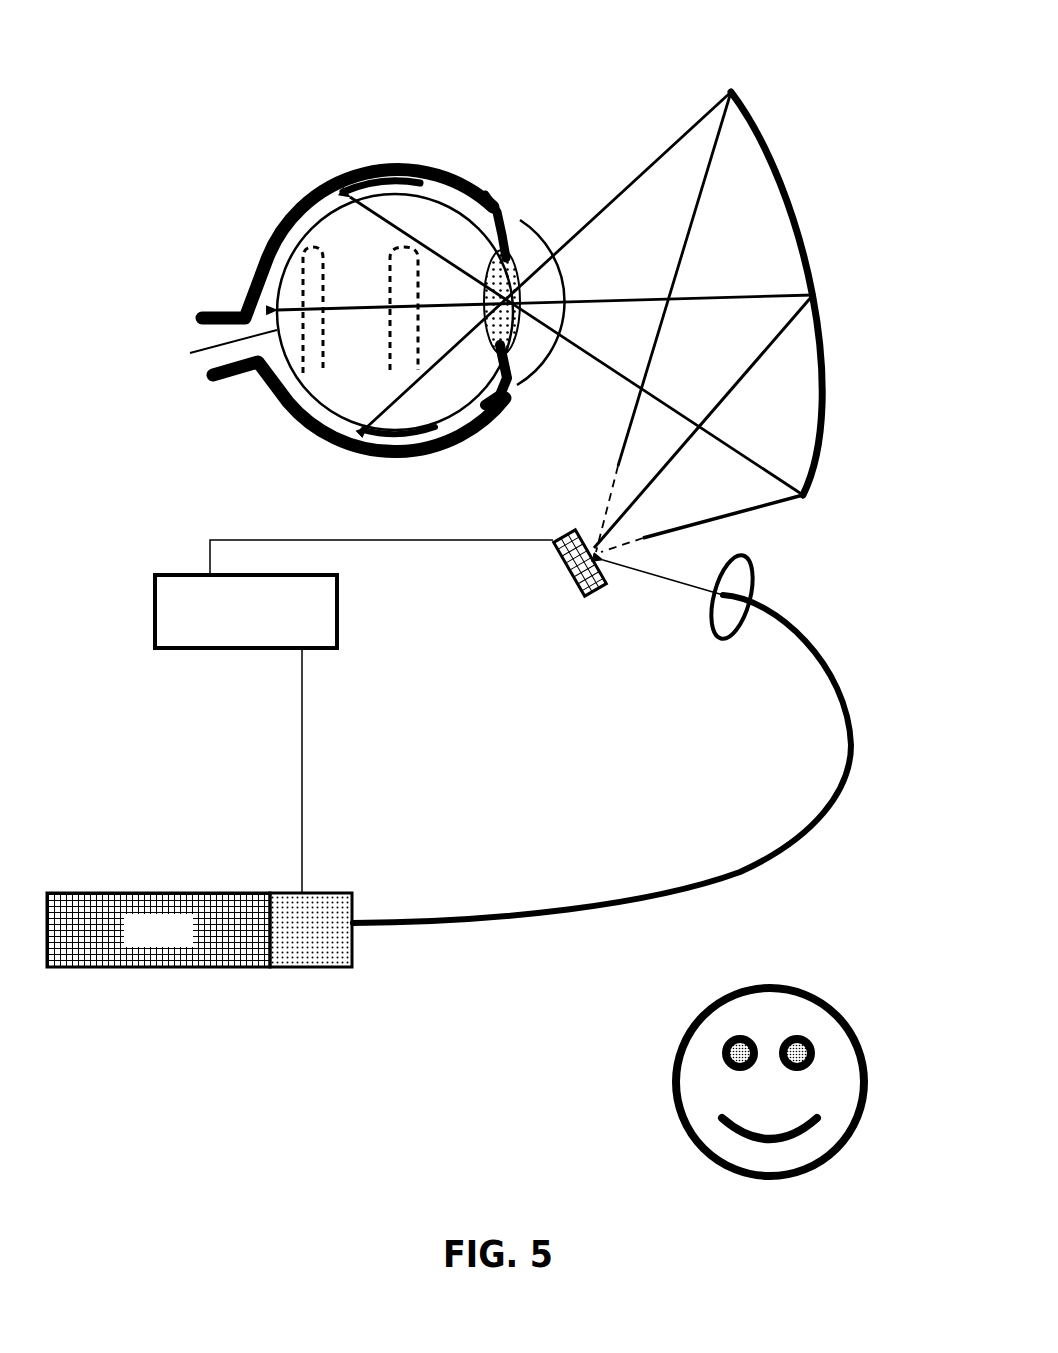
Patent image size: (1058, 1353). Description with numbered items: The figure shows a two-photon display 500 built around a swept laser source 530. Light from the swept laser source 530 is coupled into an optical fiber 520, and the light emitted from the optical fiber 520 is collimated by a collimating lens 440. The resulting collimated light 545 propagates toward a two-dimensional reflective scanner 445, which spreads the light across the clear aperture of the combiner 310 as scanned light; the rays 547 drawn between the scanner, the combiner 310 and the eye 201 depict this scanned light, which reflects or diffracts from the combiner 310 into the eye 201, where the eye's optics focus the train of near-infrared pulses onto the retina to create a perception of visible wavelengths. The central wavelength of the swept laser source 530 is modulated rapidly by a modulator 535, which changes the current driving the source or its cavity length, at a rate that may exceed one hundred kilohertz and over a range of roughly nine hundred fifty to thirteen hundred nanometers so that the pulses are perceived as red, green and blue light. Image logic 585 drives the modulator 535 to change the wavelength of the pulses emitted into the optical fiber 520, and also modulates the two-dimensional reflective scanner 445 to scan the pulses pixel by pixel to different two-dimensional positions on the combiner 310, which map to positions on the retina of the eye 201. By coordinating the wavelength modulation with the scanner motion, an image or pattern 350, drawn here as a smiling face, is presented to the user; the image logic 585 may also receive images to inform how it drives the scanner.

The two-photon display 500 is at (837, 22).
The eye 201 is at (295, 157).
The combiner 310 is at (783, 157).
The reflected light beam 547 is at (627, 415).
The two-dimensional reflective scanner 445 is at (570, 577).
The collimated light 545 is at (690, 580).
The collimating lens 440 is at (721, 636).
The optical fiber 520 is at (843, 767).
The swept laser source 530 is at (177, 944).
The modulator 535 is at (328, 893).
The image logic 585 is at (300, 623).
The pattern 350 is at (748, 985).